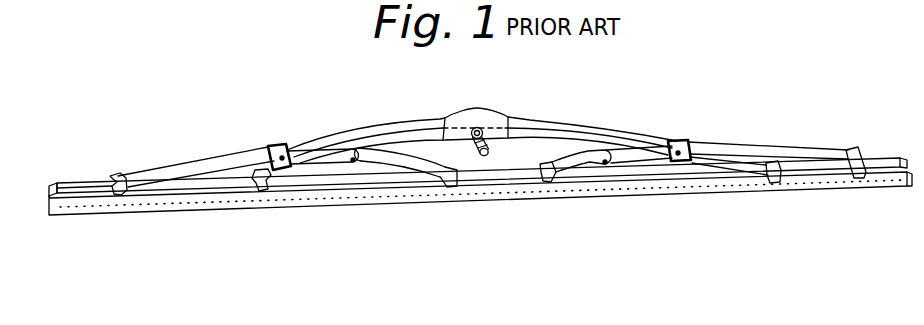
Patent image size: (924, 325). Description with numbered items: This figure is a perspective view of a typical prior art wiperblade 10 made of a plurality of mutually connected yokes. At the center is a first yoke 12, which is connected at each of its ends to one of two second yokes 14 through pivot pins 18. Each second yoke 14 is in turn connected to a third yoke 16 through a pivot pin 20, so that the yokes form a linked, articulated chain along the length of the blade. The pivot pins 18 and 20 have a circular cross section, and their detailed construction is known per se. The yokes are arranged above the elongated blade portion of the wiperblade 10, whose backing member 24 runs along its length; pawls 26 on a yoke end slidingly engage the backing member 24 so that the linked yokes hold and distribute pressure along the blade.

The wiperblade 10 is at (568, 100).
The first yoke 12 is at (434, 117).
The second yoke 14 is at (213, 156).
The third yoke 16 is at (402, 162).
The pivot pin 18 is at (282, 158).
The pivot pin 20 is at (352, 163).
The backing member 24 is at (84, 188).
The pawls 26 is at (123, 197).